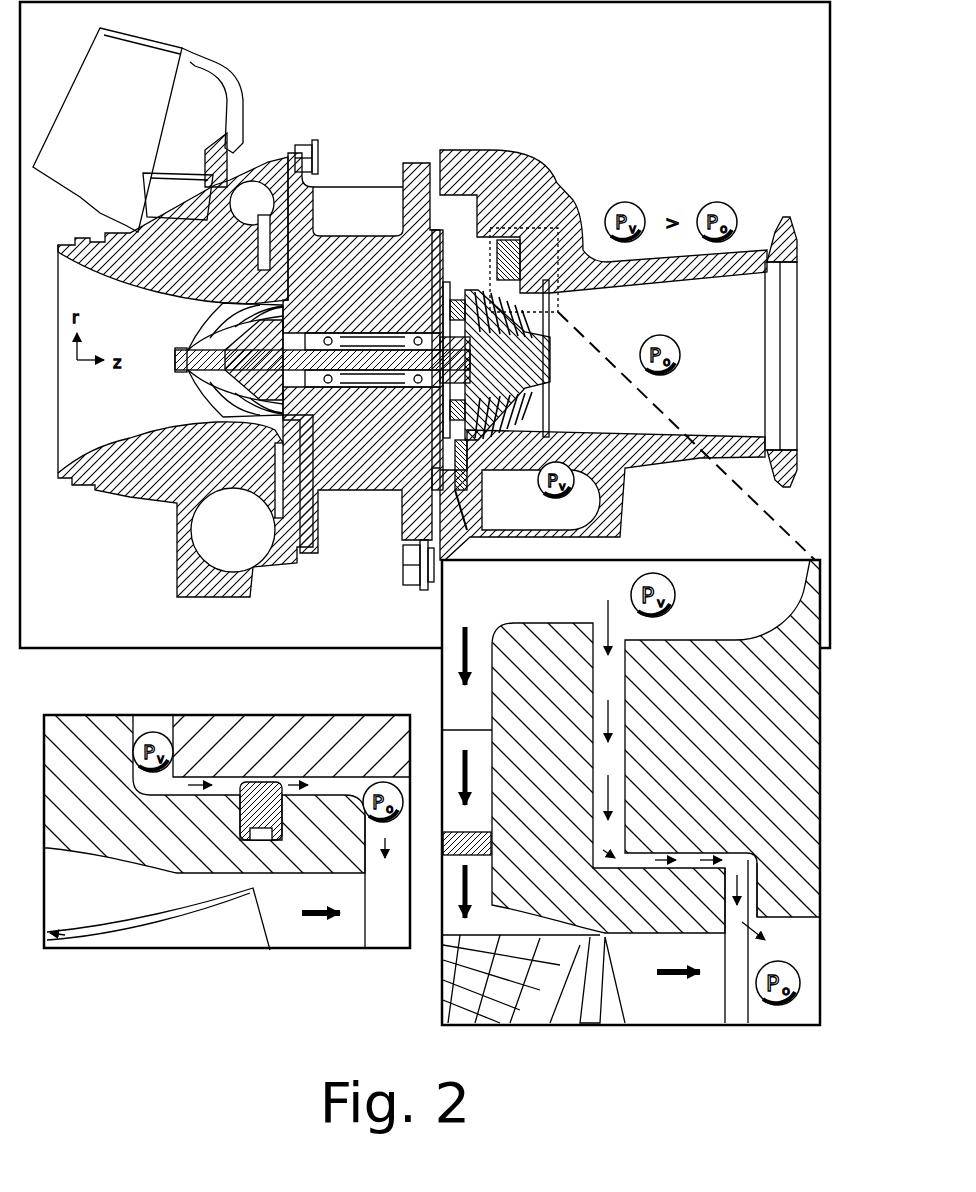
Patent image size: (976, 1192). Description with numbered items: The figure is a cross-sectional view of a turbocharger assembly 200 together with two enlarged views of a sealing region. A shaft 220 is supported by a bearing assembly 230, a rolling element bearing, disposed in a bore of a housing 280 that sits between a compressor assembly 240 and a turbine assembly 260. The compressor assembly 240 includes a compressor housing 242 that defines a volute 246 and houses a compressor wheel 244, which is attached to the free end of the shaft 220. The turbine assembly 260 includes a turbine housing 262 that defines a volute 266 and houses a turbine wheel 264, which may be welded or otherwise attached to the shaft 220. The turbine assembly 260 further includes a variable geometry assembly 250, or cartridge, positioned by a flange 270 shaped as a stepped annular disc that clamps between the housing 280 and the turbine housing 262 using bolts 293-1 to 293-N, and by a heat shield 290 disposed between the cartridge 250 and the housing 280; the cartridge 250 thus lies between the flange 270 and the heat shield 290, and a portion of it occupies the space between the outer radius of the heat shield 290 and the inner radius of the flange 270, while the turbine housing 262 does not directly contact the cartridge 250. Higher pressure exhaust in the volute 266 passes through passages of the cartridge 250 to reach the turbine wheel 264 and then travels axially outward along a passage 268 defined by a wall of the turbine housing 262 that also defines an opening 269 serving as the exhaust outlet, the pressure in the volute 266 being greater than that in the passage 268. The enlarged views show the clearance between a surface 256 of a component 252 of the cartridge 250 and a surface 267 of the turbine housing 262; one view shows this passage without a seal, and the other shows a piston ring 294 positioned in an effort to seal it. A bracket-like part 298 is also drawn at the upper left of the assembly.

The turbocharger assembly 200 is at (739, 50).
The bracket / actuator mount 298 is at (270, 73).
The bolt 293-1 is at (413, 170).
The bolt 293-N is at (399, 565).
The turbine assembly 260 is at (656, 151).
The compressor housing 242 is at (178, 273).
The housing 280 is at (361, 353).
The volute 266 is at (512, 226).
The turbine housing 262 is at (496, 549).
The heat shield 290 is at (458, 317).
The turbine wheel 264 is at (496, 369).
The opening 269 is at (797, 322).
The passage 268 is at (703, 365).
The compressor wheel 244 is at (233, 393).
The shaft 220 is at (176, 366).
The bearing assembly 230 is at (352, 405).
The volute 246 is at (218, 540).
The compressor assembly 240 is at (185, 506).
The flange 270 is at (473, 500).
The variable geometry assembly 250 is at (526, 500).
The piston ring 294 is at (272, 778).
The component 252 is at (533, 794).
The surface 267 is at (642, 760).
The surface 256 is at (728, 928).